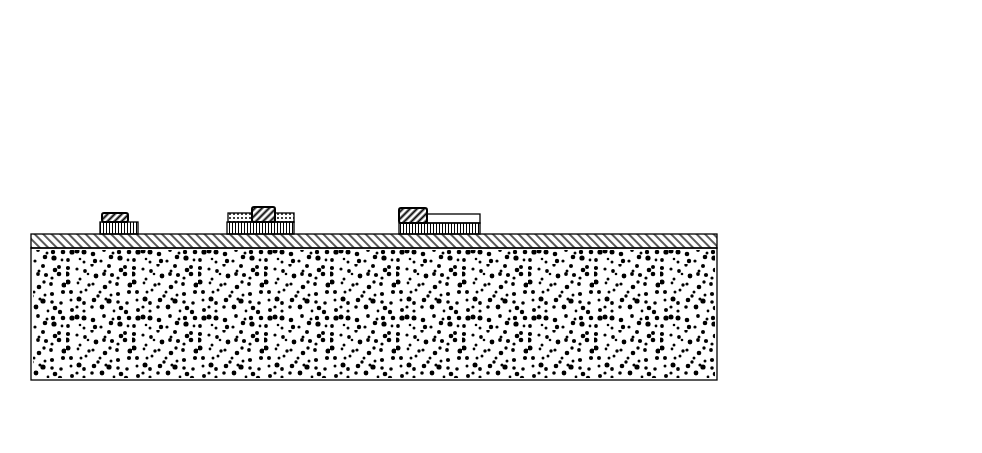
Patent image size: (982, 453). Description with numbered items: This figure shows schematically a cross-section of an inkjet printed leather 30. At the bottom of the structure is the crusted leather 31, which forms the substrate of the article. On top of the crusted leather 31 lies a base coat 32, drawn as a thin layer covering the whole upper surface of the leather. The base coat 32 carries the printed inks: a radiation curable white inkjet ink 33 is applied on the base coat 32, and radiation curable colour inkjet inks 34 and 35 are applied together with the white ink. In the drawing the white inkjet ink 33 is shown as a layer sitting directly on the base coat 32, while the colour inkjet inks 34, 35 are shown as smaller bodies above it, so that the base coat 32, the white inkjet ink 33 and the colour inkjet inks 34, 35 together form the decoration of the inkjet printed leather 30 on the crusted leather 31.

The inkjet printed leather 30 is at (333, 153).
The crusted leather 31 is at (705, 367).
The base coat 32 is at (717, 242).
The radiation curable white inkjet ink 33 is at (480, 228).
The radiation curable colour inkjet ink 34 is at (447, 213).
The radiation curable colour inkjet ink 35 is at (412, 208).